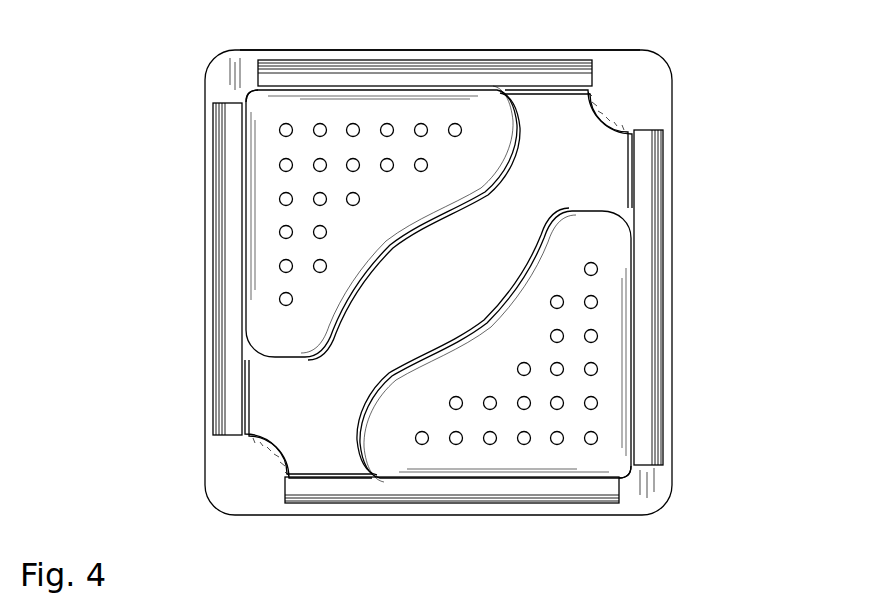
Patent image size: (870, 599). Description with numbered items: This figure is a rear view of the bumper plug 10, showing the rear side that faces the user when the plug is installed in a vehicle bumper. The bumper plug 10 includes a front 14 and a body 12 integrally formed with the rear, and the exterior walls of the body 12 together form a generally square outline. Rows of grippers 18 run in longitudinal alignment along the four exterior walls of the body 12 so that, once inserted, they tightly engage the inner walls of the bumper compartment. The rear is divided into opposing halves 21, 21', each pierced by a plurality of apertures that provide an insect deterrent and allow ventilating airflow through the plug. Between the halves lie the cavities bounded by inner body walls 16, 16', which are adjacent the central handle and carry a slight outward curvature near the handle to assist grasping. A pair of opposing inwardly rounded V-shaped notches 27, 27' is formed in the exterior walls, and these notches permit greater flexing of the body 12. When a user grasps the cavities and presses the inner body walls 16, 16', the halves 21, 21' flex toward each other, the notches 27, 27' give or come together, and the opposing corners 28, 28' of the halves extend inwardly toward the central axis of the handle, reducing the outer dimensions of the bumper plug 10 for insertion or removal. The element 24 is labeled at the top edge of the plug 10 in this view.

The bumper plug 10 is at (495, 288).
The body 12 is at (256, 397).
The front 14 is at (673, 243).
The inner body wall 16 is at (410, 223).
The inner body wall 16' is at (466, 345).
The grippers 18 is at (512, 80).
The half 21 is at (494, 345).
The half 21' is at (383, 223).
The top edge 24 is at (320, 57).
The inwardly rounded V-shaped notch 27 is at (245, 488).
The inwardly rounded V-shaped notch 27' is at (655, 76).
The corner 28 is at (667, 499).
The corner 28' is at (197, 69).